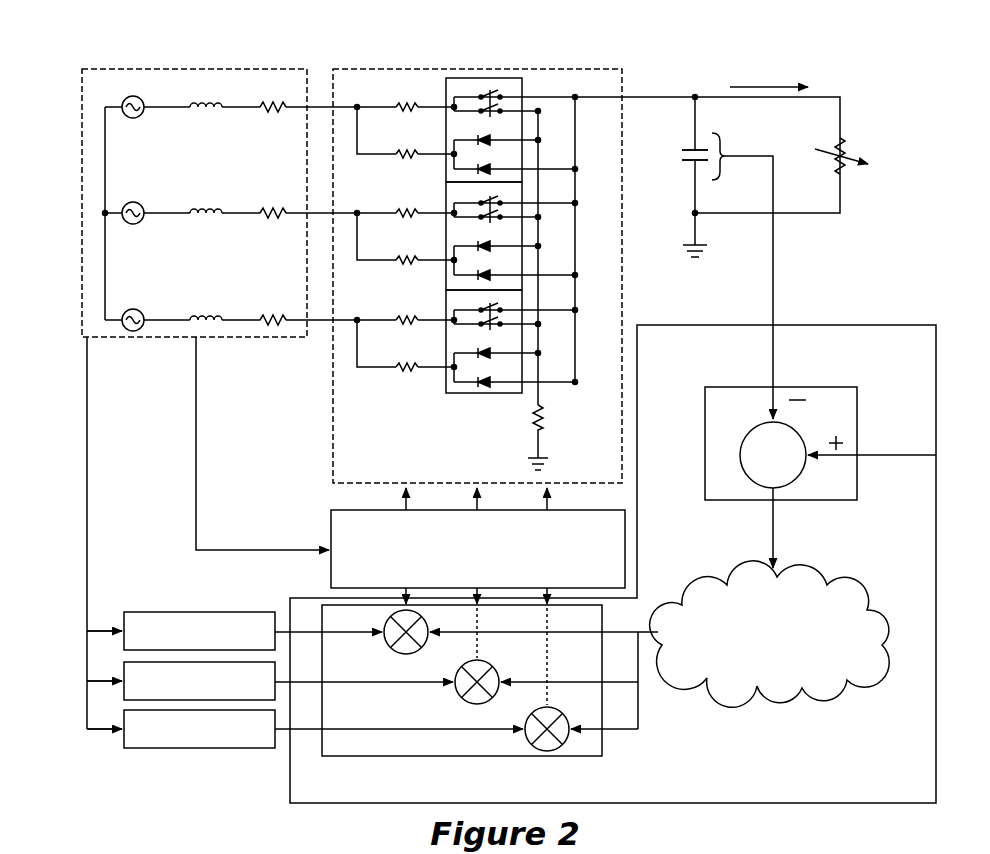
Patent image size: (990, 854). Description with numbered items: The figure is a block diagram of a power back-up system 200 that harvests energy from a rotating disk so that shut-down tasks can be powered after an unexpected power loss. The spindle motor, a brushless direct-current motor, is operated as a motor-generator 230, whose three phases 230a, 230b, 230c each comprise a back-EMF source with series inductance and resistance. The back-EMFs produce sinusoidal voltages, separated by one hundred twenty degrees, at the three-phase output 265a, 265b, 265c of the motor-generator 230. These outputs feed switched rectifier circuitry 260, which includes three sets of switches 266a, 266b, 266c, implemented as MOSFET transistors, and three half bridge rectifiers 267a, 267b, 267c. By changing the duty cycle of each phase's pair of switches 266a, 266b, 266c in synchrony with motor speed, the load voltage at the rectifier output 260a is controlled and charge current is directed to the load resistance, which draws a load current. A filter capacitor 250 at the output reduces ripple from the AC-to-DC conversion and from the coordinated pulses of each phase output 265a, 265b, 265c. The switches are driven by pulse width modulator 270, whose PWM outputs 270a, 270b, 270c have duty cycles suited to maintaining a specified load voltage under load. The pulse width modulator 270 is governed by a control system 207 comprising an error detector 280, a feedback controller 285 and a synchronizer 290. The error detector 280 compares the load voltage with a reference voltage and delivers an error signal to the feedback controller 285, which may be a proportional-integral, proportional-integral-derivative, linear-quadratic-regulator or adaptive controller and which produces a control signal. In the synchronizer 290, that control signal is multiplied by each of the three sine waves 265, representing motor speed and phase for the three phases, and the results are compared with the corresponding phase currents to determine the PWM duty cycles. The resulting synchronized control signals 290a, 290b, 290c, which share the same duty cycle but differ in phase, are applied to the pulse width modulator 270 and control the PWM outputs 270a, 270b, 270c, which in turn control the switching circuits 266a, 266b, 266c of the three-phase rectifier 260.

The power back-up system 200 is at (737, 36).
The control system 207 is at (898, 333).
The motor-generator 230 is at (112, 68).
The first phase of motor-generator 230a is at (105, 107).
The second phase of motor-generator 230b is at (105, 217).
The third phase of motor-generator 230c is at (112, 322).
The capacitor 250 is at (690, 146).
The switched rectifier circuitry 260 is at (535, 68).
The rectifier output 260a is at (620, 97).
The sine waves 265 is at (142, 749).
The first phase output 265a is at (357, 105).
The second phase output 265b is at (358, 212).
The third phase output 265c is at (358, 319).
The first set of switches 266a is at (522, 80).
The second set of switches 266b is at (522, 190).
The third set of switches 266c is at (522, 300).
The first half bridge rectifier 267a is at (522, 152).
The second half bridge rectifier 267b is at (522, 264).
The third half bridge rectifier 267c is at (522, 364).
The pulse width modulator 270 is at (331, 525).
The first PWM signal 270a is at (404, 484).
The second PWM signal 270b is at (474, 484).
The third PWM signal 270c is at (545, 484).
The error detector 280 is at (717, 386).
The feedback controller 285 is at (835, 570).
The synchronizer 290 is at (505, 757).
The first synchronized control signal 290a is at (406, 604).
The second synchronized control signal 290b is at (477, 604).
The third synchronized control signal 290c is at (547, 606).